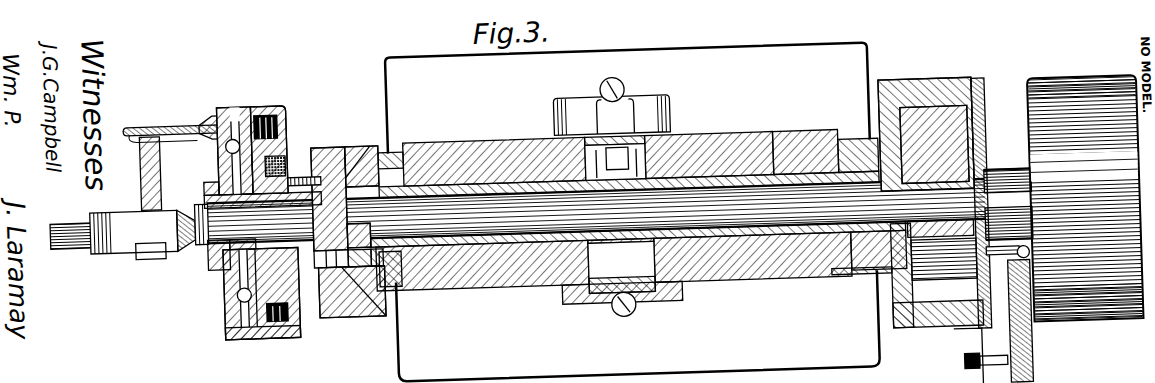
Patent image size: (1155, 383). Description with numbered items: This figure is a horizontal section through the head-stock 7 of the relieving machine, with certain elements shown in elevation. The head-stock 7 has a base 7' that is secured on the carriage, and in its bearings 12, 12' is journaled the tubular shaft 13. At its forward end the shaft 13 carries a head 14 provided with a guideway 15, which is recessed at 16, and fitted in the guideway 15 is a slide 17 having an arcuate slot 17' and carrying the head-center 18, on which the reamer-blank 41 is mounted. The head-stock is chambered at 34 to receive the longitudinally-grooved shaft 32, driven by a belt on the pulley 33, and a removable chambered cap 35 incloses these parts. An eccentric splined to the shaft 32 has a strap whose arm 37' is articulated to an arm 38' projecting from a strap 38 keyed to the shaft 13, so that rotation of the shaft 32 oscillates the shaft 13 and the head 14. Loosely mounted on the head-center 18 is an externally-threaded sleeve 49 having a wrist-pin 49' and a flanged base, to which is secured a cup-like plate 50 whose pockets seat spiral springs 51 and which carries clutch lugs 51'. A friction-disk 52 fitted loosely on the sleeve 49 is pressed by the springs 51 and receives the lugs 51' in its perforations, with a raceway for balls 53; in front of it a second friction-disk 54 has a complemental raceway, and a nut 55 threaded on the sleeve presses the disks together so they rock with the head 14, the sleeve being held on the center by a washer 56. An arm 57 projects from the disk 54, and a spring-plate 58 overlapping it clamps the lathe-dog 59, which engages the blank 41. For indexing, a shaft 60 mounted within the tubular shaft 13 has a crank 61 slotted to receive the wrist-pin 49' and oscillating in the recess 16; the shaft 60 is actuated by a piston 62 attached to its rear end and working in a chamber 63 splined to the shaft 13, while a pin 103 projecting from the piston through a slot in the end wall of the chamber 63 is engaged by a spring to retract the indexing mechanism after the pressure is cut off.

The head-stock 7 is at (623, 115).
The base of head-stock 7' is at (662, 81).
The bearing 12 is at (640, 278).
The bearing 12' is at (853, 271).
The tubular shaft 13 is at (722, 170).
The head 14 is at (358, 138).
The guideway 15 is at (325, 140).
The recess 16 is at (400, 304).
The slide 17 is at (315, 179).
The arcuate slot 17' is at (349, 304).
The head-center 18 is at (595, 211).
The longitudinally-grooved shaft 32 is at (1003, 180).
The pulley 33 is at (1086, 335).
The chamber 34 is at (644, 290).
The chambered cap or cover 35 is at (614, 313).
The arm of eccentric strap 37' is at (638, 137).
The strap 38 is at (622, 267).
The arm of strap 38' is at (636, 121).
The reamer-blank 41 is at (130, 233).
The externally-threaded sleeve 49 is at (234, 324).
The wrist-pin 49' is at (365, 300).
The cup-like or flanged plate 50 is at (272, 97).
The spiral springs 51 is at (291, 235).
The clutch lugs or projections 51' is at (311, 120).
The friction-disk 52 is at (222, 103).
The balls 53 is at (219, 101).
The second friction-disk 54 is at (236, 330).
The nut 55 is at (210, 149).
The washer 56 is at (203, 256).
The arm 57 is at (130, 112).
The spring-plate 58 is at (165, 112).
The lathe-dog 59 is at (142, 150).
The shaft 60 is at (771, 200).
The crank 61 is at (404, 296).
The piston 62 is at (980, 122).
The chamber 63 is at (912, 90).
The pin 103 is at (1001, 257).